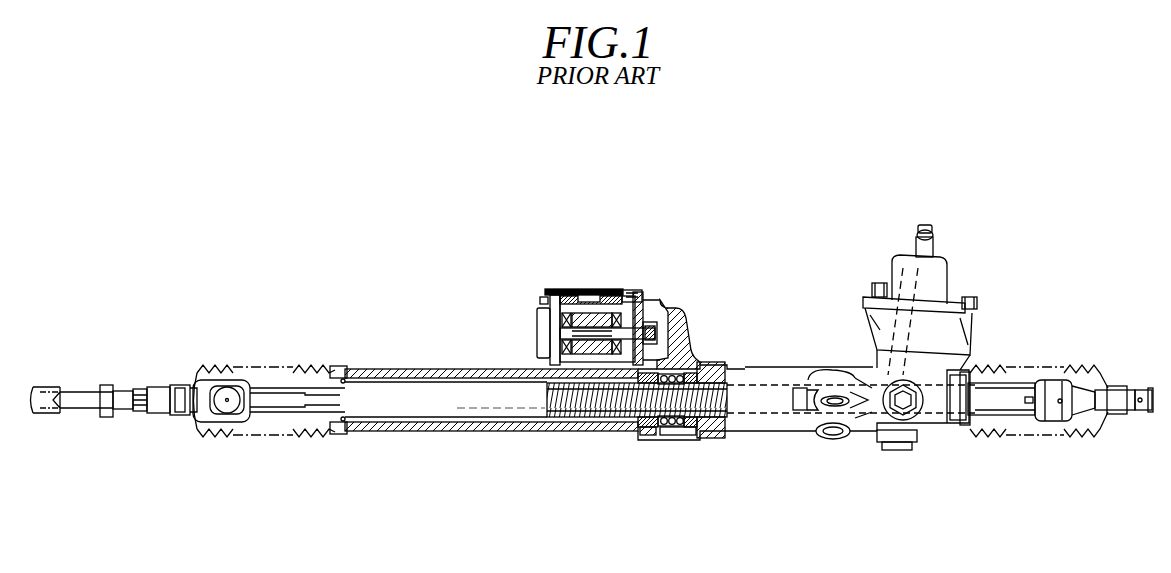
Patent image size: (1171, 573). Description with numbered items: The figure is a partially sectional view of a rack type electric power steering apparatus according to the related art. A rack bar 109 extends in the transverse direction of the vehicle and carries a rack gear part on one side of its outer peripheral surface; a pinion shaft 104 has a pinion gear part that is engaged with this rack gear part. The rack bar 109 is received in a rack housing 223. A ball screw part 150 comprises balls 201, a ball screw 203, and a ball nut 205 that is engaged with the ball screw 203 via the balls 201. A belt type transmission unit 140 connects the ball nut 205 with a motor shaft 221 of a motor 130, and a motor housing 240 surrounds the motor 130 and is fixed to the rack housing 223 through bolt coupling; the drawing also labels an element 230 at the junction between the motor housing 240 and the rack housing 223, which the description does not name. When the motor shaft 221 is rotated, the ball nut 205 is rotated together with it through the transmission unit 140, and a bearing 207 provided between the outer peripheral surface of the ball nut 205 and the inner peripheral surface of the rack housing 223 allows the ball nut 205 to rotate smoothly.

The belt type transmission unit 140 is at (703, 233).
The motor housing 240 is at (535, 290).
The motor 130 is at (588, 290).
The motor shaft 221 is at (655, 300).
The housing flange 230 is at (680, 331).
The bearing 207 is at (697, 363).
The pinion shaft 104 is at (945, 237).
The rack bar 109 is at (420, 400).
The rack housing 223 is at (475, 430).
The ball nut 205 is at (648, 436).
The balls 201 is at (673, 436).
The ball screw 203 is at (703, 429).
The ball screw part 150 is at (681, 452).